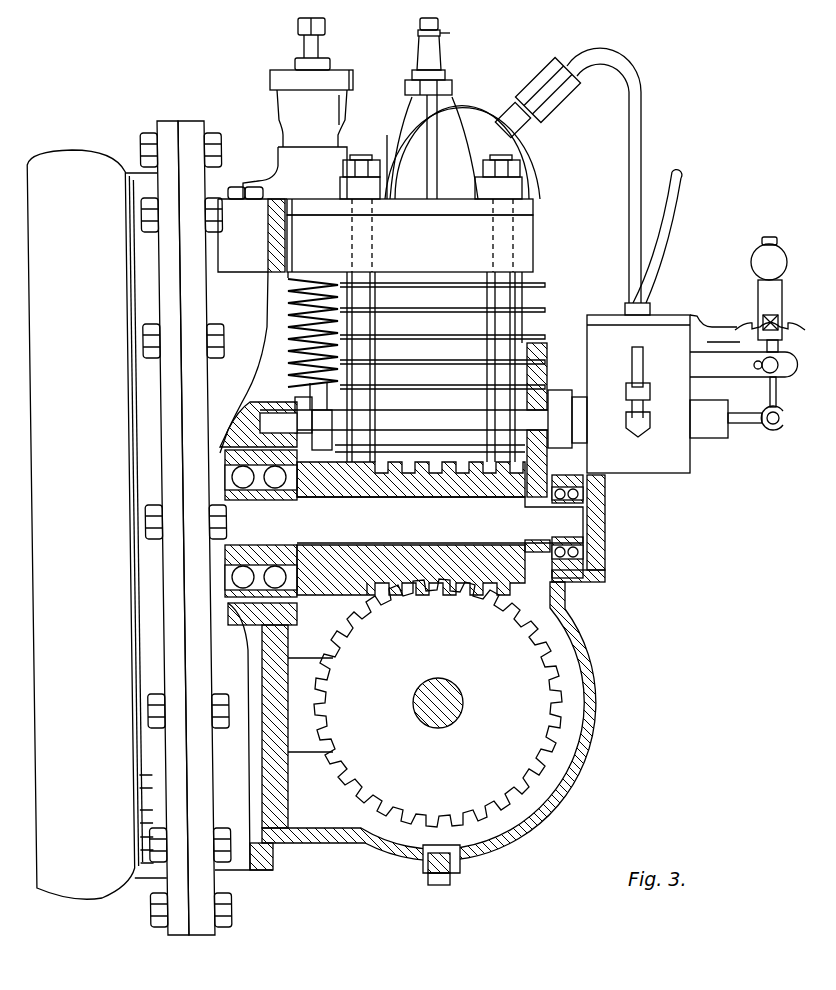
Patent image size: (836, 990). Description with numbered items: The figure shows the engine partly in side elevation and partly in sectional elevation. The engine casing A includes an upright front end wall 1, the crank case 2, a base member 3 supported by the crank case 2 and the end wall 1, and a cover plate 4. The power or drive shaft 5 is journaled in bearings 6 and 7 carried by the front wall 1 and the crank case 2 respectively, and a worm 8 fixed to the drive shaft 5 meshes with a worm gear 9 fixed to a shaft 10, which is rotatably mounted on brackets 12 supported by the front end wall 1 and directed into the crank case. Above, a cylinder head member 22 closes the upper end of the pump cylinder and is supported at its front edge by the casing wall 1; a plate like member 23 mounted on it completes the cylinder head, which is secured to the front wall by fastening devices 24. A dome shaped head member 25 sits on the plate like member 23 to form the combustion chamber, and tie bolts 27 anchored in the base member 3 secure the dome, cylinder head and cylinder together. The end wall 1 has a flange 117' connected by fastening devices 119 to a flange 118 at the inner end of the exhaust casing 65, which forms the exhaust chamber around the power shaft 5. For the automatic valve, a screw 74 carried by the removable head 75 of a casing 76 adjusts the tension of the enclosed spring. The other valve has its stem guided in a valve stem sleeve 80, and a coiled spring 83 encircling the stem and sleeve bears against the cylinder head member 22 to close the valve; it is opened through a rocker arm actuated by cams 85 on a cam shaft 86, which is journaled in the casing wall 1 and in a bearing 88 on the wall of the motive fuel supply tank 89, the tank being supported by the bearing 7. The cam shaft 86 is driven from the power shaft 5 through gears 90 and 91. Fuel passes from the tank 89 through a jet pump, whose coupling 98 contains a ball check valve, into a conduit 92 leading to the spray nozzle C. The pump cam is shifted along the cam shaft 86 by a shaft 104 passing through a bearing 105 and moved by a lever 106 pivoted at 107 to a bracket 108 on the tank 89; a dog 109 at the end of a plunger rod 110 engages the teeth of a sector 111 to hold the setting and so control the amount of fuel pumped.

The front end wall 1 is at (252, 766).
The crank case 2 is at (550, 807).
The base member 3 is at (345, 568).
The cover plate 4 is at (417, 452).
The power or drive shaft 5 is at (358, 505).
The bearing 6 is at (250, 495).
The bearing 7 is at (583, 542).
The worm 8 is at (436, 483).
The worm gear 9 is at (438, 703).
The shaft 10 is at (460, 708).
The brackets 12 is at (315, 745).
The cylinder head member 22 is at (534, 243).
The plate like member 23 is at (534, 206).
The fastening devices 24 is at (266, 182).
The dome shaped head member 25 is at (448, 140).
The tie bolts 27 is at (358, 155).
The exhaust casing 65 is at (97, 524).
The screw 74 is at (316, 40).
The removable head 75 is at (277, 72).
The casing 76 is at (312, 118).
The valve stem sleeve 80 is at (290, 327).
The coiled spring 83 is at (288, 288).
The cams 85 is at (312, 438).
The cam shaft 86 is at (418, 425).
The bearing 88 is at (560, 407).
The motive fuel supply tank 89 is at (658, 475).
The gear 90 is at (540, 553).
The gear 91 is at (545, 350).
The conduit 92 is at (641, 116).
The coupling 98 is at (642, 436).
The shaft 104 is at (748, 424).
The bearing 105 is at (713, 436).
The lever 106 is at (770, 394).
The pivot 107 is at (753, 392).
The bracket 108 is at (744, 328).
The dog 109 is at (760, 312).
The plunger rod 110 is at (760, 242).
The sector 111 is at (740, 323).
The flange 117' is at (202, 509).
The flange 118 is at (167, 128).
The fastening devices 119 is at (224, 147).
The engine casing A is at (259, 872).
The spray nozzle C is at (548, 118).